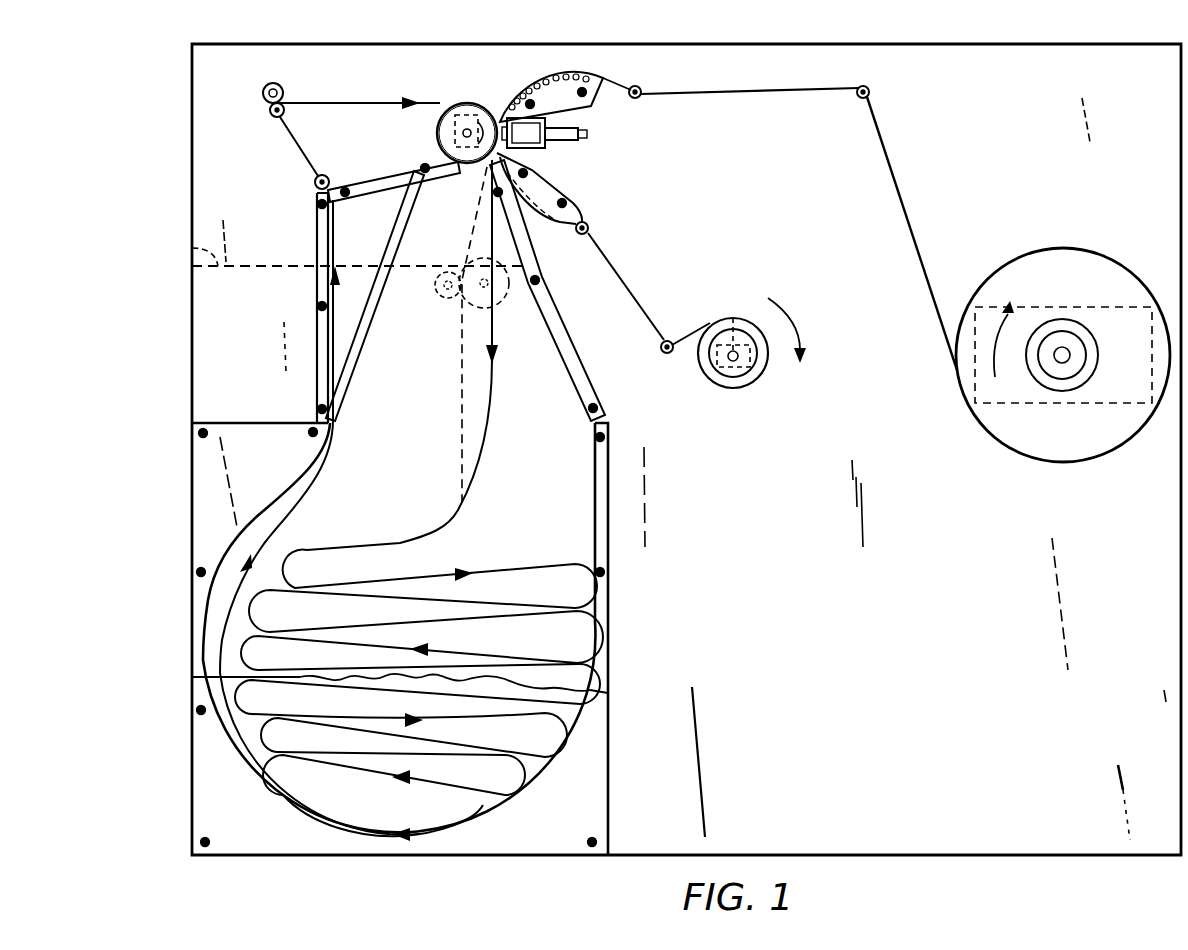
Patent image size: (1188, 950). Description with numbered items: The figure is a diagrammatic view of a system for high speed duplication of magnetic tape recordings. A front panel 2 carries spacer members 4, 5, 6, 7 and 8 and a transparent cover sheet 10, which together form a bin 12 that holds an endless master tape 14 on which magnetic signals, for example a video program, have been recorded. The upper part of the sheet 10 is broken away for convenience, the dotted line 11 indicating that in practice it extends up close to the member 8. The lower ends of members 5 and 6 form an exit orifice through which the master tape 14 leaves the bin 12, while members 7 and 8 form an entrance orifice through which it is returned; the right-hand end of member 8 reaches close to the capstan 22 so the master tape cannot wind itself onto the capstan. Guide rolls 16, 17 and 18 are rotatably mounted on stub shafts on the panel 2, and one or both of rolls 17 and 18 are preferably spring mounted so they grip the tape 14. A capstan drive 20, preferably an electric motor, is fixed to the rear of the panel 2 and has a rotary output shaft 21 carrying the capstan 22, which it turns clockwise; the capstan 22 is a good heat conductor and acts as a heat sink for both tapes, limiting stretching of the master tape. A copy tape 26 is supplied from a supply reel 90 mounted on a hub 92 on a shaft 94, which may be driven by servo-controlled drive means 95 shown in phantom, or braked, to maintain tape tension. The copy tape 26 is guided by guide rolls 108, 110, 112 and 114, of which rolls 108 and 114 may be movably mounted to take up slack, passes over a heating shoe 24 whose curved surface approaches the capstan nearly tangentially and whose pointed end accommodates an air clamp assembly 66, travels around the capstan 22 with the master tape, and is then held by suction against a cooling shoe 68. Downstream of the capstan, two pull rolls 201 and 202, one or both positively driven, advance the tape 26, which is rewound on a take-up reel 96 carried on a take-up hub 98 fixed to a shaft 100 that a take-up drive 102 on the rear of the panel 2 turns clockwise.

The front panel 2 is at (192, 110).
The spacer member 4 is at (208, 487).
The spacer member 5 is at (318, 297).
The spacer member 6 is at (357, 363).
The spacer member 7 is at (573, 372).
The spacer member 8 is at (372, 180).
The transparent cover sheet 10 is at (608, 683).
The dotted line 11 is at (192, 260).
The bin 12 is at (216, 603).
The endless master tape 14 is at (318, 476).
The guide roll 16 is at (313, 183).
The guide roll 17 is at (268, 85).
The guide roll 18 is at (269, 108).
The capstan drive 20 is at (458, 113).
The rotary output shaft 21 is at (463, 130).
The capstan 22 is at (436, 133).
The heating shoe 24 is at (597, 63).
The copy tape 26 is at (908, 206).
The air clamp assembly 66 is at (570, 147).
The cooling shoe 68 is at (572, 179).
The supply reel 90 is at (1012, 452).
The hub 92 is at (1086, 372).
The shaft 94 is at (1072, 355).
The servo-controlled drive means 95 is at (1090, 405).
The take-up reel 96 is at (724, 388).
The take-up hub 98 is at (710, 370).
The shaft 100 is at (745, 357).
The take-up drive 102 is at (733, 318).
The guide roll 108 is at (860, 99).
The guide roll 110 is at (641, 90).
The guide roll 112 is at (580, 236).
The guide roll 114 is at (669, 340).
The pull roll 201 is at (505, 298).
The pull roll 202 is at (440, 293).